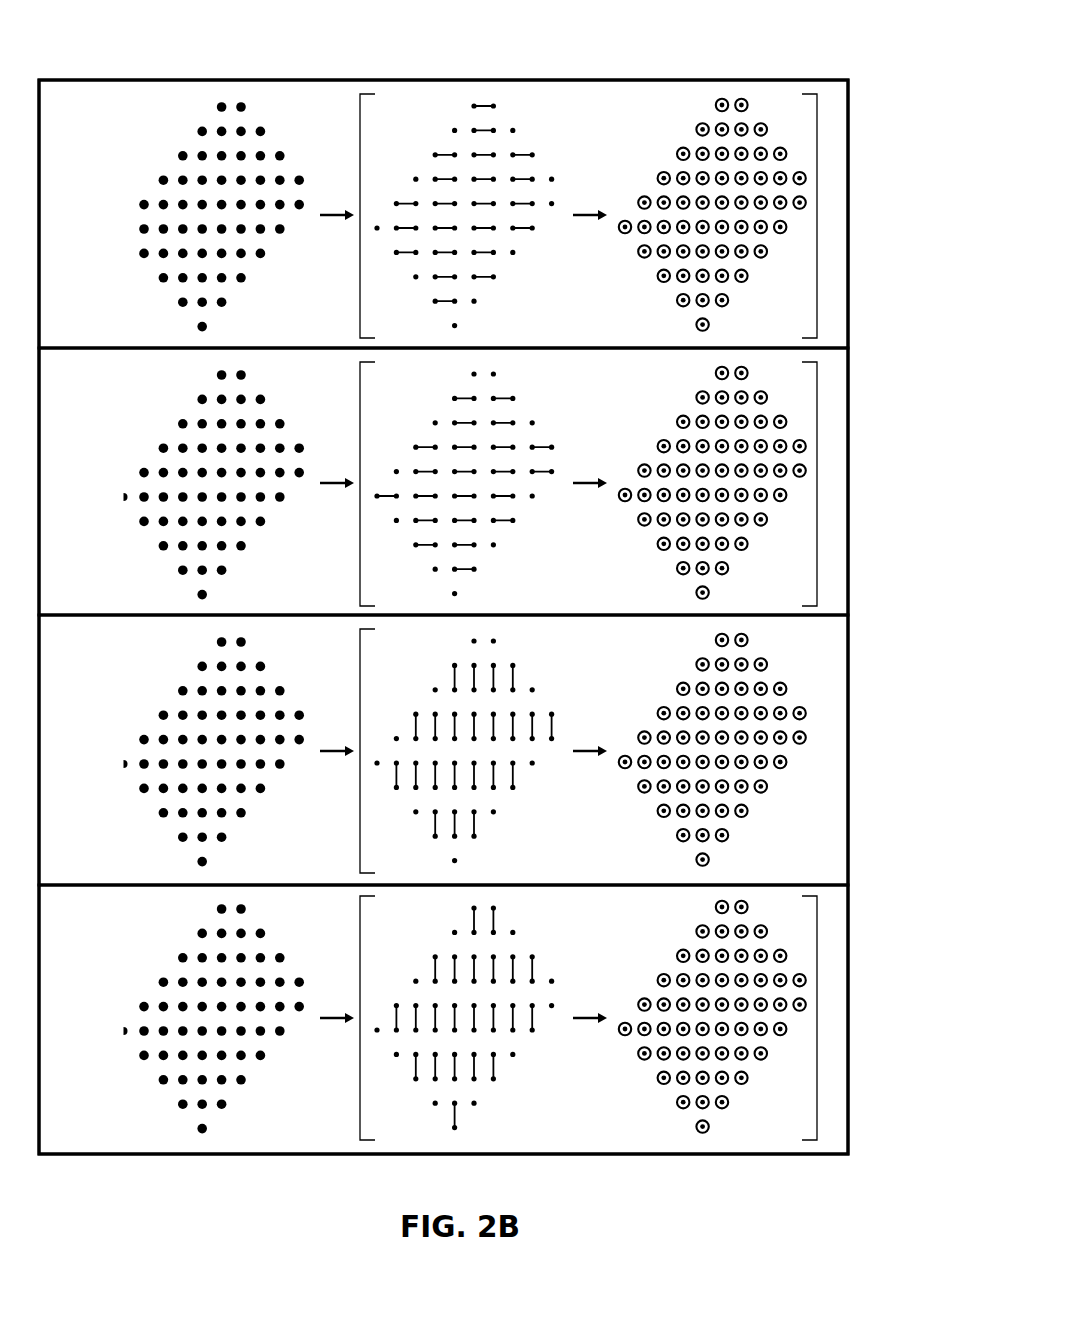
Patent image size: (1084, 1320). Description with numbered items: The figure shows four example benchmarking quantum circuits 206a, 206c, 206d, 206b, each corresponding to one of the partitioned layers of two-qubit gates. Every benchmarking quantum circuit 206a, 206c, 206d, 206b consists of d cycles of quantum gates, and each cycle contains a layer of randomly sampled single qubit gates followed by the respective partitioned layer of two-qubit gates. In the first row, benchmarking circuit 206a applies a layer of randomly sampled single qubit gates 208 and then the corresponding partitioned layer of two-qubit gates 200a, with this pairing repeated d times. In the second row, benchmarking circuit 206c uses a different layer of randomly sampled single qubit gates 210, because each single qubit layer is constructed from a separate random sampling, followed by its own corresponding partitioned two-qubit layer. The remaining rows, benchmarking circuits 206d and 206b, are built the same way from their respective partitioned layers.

The partitioned layer of two-qubit gates 200a is at (425, 133).
The layer of randomly sampled single qubit gates 208 is at (665, 141).
The layer of randomly sampled single qubit gates 210 is at (665, 416).
The benchmarking quantum circuit 206a is at (499, 190).
The benchmarking quantum circuit 206c is at (499, 481).
The benchmarking quantum circuit 206d is at (848, 654).
The benchmarking quantum circuit 206b is at (848, 930).